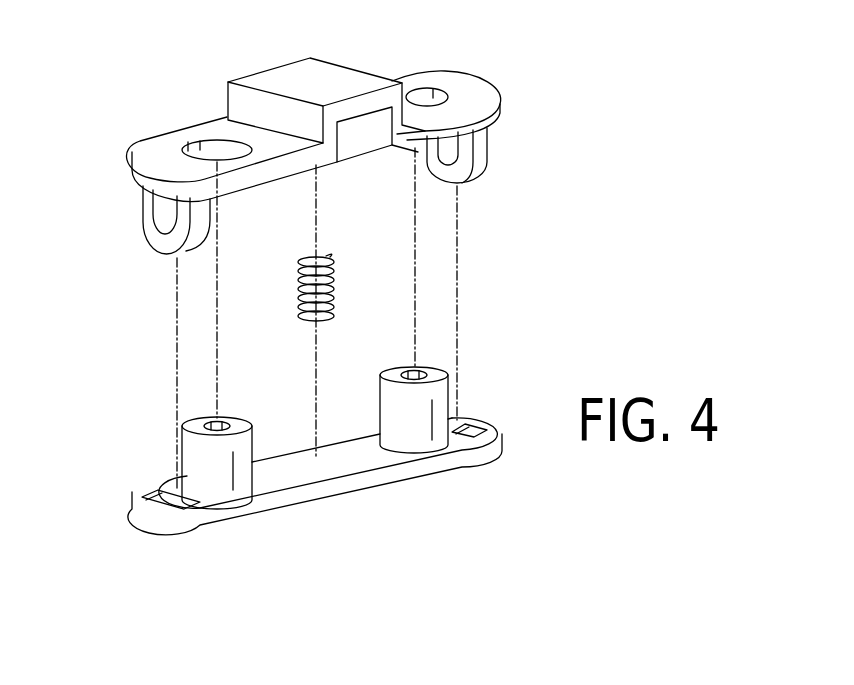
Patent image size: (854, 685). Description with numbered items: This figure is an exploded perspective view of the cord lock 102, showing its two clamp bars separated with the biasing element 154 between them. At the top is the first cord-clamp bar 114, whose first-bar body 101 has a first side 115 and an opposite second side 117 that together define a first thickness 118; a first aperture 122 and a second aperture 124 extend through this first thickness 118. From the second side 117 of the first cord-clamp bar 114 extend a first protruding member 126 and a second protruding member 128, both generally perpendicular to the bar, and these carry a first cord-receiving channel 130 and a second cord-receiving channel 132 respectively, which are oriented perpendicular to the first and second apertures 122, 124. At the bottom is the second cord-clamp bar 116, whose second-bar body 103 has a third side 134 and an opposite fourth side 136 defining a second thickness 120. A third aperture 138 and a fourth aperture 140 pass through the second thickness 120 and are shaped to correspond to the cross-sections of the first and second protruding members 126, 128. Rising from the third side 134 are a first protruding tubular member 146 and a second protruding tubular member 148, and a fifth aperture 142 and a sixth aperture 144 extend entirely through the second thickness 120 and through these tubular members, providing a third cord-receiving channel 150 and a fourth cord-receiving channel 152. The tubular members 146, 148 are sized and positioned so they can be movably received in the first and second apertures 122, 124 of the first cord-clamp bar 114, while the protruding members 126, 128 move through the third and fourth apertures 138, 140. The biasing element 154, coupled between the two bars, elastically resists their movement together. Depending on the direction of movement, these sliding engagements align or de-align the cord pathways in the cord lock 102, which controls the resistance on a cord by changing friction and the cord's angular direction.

The first-bar body 101 is at (140, 170).
The cord lock 102 is at (654, 93).
The second-bar body 103 is at (140, 517).
The first cord-clamp bar 114 is at (287, 74).
The first side 115 is at (479, 85).
The second cord-clamp bar 116 is at (388, 482).
The second side 117 is at (500, 118).
The first thickness 118 is at (273, 122).
The second thickness 120 is at (357, 448).
The first aperture 122 is at (215, 147).
The second aperture 124 is at (423, 93).
The first protruding member 126 is at (162, 245).
The second protruding member 128 is at (483, 152).
The first cord-receiving channel 130 is at (166, 204).
The second cord-receiving channel 132 is at (441, 153).
The third side 134 is at (166, 477).
The fourth side 136 is at (183, 536).
The third aperture 138 is at (160, 495).
The fourth aperture 140 is at (468, 418).
The fifth aperture 142 is at (224, 422).
The sixth aperture 144 is at (423, 373).
The first protruding tubular member 146 is at (243, 484).
The second protruding tubular member 148 is at (410, 430).
The third cord-receiving channel 150 is at (208, 422).
The fourth cord-receiving channel 152 is at (410, 373).
The biasing element 154 is at (332, 262).